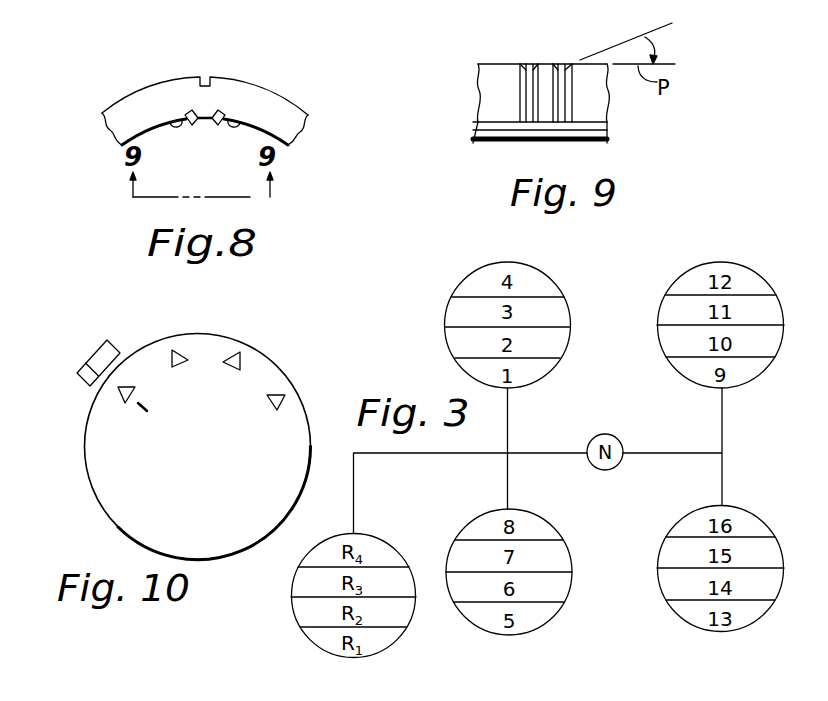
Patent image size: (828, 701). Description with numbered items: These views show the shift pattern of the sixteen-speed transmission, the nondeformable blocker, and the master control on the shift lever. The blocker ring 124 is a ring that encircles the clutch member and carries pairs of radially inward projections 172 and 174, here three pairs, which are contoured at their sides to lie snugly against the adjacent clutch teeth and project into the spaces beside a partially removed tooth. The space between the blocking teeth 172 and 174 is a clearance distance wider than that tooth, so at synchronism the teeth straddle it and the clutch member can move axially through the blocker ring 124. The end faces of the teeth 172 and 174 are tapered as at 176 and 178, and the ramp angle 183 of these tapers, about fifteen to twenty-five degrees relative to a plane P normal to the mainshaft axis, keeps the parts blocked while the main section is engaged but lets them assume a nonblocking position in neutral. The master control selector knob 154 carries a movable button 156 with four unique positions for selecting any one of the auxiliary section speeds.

In FIG. 8, the blocker ring 124 is at (291, 114).
In FIG. 9, the blocker ring 124 is at (595, 103).
In FIG. 8, the radially inward projection 172 is at (252, 123).
In FIG. 9, the radially inward projection 172 is at (567, 82).
In FIG. 8, the radially inward projection 174 is at (174, 124).
In FIG. 9, the radially inward projection 174 is at (522, 82).
In FIG. 8, the taper 176 is at (220, 127).
In FIG. 9, the taper 176 is at (558, 72).
In FIG. 8, the taper 178 is at (190, 127).
In FIG. 9, the taper 178 is at (537, 72).
In FIG. 9, the ramp angle 183 is at (654, 47).
In FIG. 10, the selector knob 154 is at (284, 358).
In FIG. 10, the button 156 is at (85, 383).